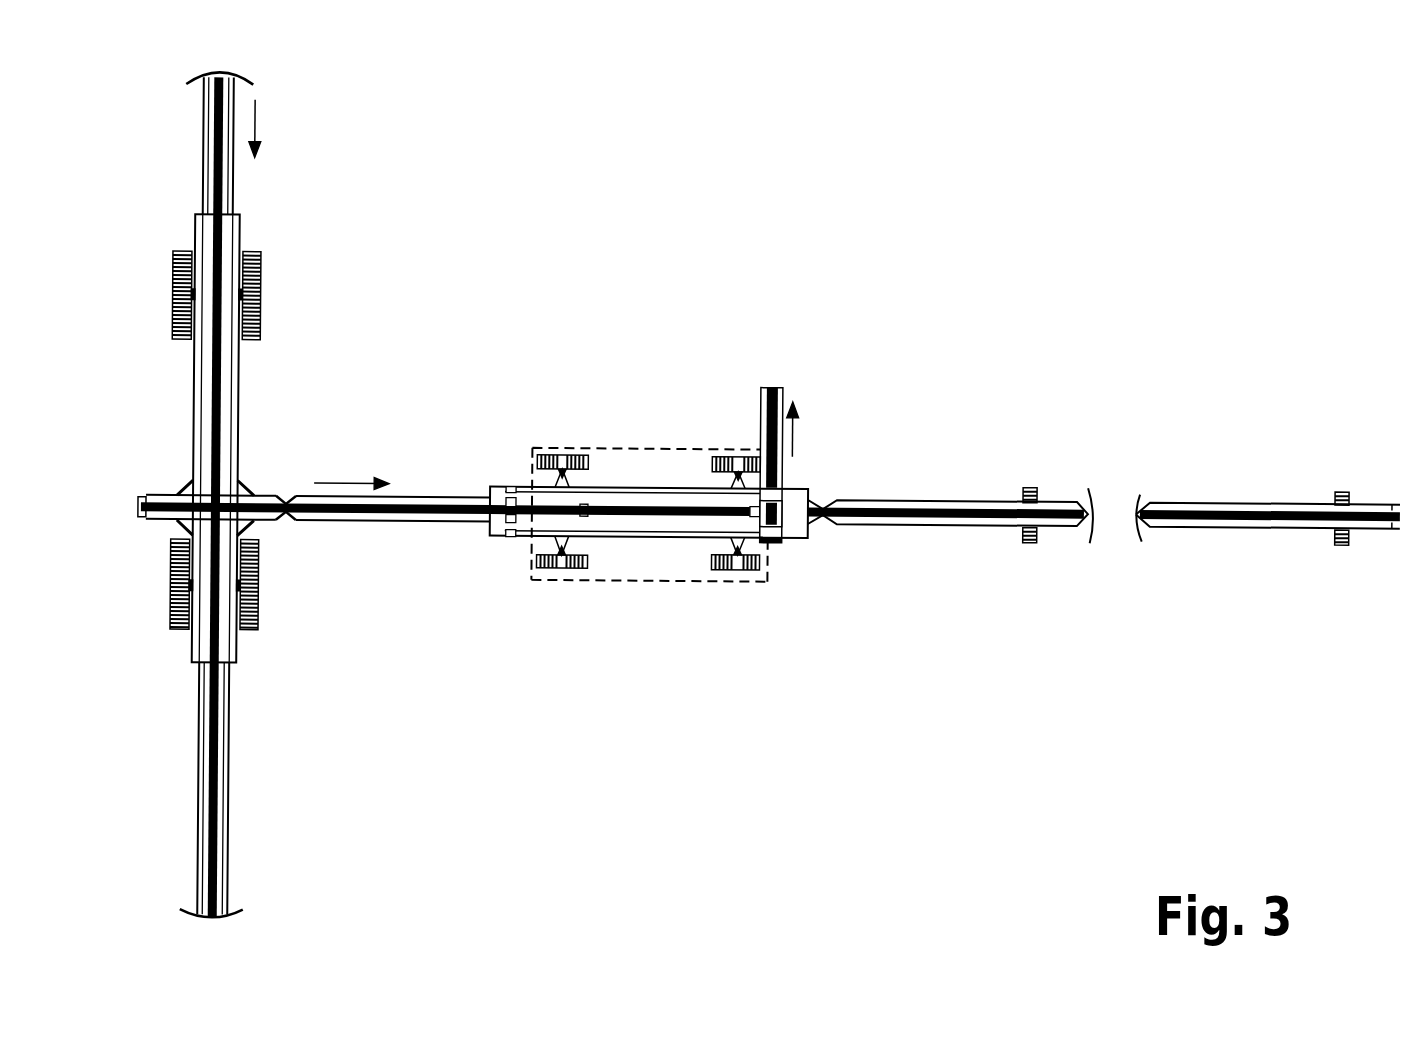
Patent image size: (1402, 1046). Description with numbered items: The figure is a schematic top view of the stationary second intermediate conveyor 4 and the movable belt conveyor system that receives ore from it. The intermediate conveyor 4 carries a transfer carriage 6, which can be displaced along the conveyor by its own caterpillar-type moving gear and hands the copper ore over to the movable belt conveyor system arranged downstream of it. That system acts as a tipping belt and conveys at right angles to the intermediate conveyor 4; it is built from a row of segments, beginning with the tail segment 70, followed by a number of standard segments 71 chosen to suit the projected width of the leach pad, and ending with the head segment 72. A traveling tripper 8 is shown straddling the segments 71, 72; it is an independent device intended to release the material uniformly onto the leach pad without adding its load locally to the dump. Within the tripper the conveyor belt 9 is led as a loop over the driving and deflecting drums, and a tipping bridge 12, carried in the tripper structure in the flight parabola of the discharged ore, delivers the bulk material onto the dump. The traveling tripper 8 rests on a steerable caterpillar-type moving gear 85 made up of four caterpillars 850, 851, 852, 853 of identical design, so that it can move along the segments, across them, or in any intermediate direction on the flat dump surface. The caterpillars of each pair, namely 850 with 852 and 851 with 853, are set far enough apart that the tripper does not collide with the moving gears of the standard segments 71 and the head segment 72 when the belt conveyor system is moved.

The second intermediate conveyor 4 is at (220, 196).
The transfer carriage 6 is at (239, 378).
The tail segment 70 is at (268, 517).
The standard segment 71 is at (412, 520).
The steerable caterpillar-type moving gear 85 is at (640, 446).
The caterpillar 850 is at (558, 453).
The caterpillar 851 is at (732, 453).
The caterpillar 852 is at (548, 573).
The caterpillar 853 is at (738, 570).
The traveling tripper 8 is at (618, 522).
The tipping bridge 12 is at (777, 398).
The conveyor belt 9 is at (1088, 523).
The head segment 72 is at (1238, 525).